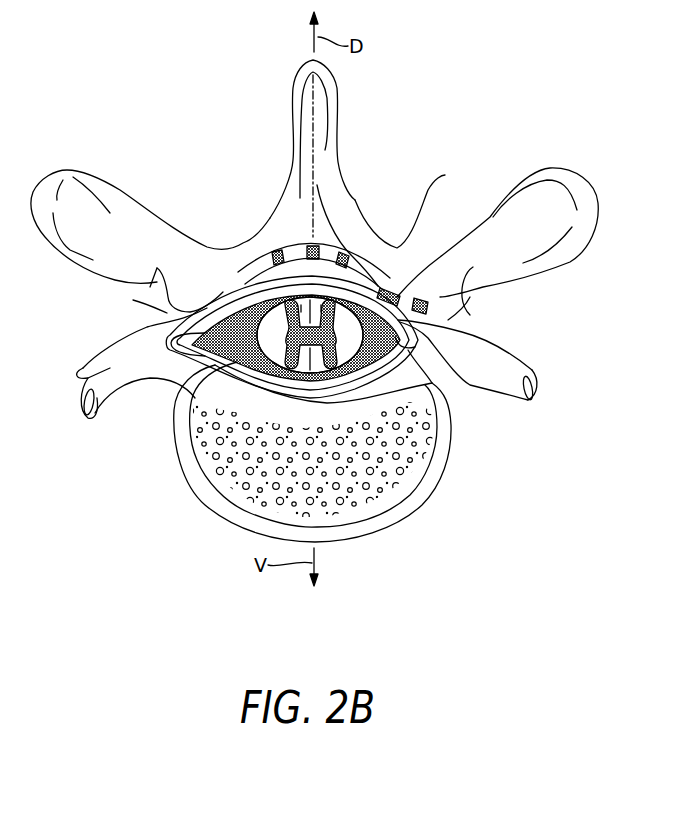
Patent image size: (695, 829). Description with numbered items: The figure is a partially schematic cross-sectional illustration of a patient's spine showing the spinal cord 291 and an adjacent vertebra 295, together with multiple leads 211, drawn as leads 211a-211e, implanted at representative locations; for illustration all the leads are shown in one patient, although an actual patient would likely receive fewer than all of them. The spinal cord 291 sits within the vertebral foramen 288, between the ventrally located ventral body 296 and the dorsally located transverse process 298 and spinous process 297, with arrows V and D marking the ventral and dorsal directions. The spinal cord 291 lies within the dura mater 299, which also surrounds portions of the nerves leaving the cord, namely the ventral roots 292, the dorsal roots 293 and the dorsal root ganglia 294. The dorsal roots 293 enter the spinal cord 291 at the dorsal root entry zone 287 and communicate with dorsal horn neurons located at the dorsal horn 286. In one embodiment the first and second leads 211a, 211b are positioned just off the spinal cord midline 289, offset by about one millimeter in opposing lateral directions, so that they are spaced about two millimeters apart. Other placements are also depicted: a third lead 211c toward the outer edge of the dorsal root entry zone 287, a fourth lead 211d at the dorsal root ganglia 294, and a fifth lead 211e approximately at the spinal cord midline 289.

The leads 211 is at (464, 136).
The first lead 211a is at (240, 254).
The second lead 211b is at (365, 258).
The third lead 211c is at (422, 305).
The fourth lead 211d is at (428, 308).
The fifth lead 211e is at (380, 290).
The dorsal horn 286 is at (360, 378).
The dorsal root entry zone 287 is at (445, 175).
The vertebral foramen 288 is at (200, 472).
The spinal cord midline 289 is at (315, 131).
The spinal cord 291 is at (277, 331).
The ventral roots 292 is at (398, 457).
The dorsal roots 293 is at (478, 337).
The dorsal root ganglia 294 is at (442, 370).
The vertebra 295 is at (144, 304).
The ventral body 296 is at (347, 387).
The spinous process 297 is at (330, 93).
The transverse process 298 is at (67, 168).
The dura mater 299 is at (150, 368).